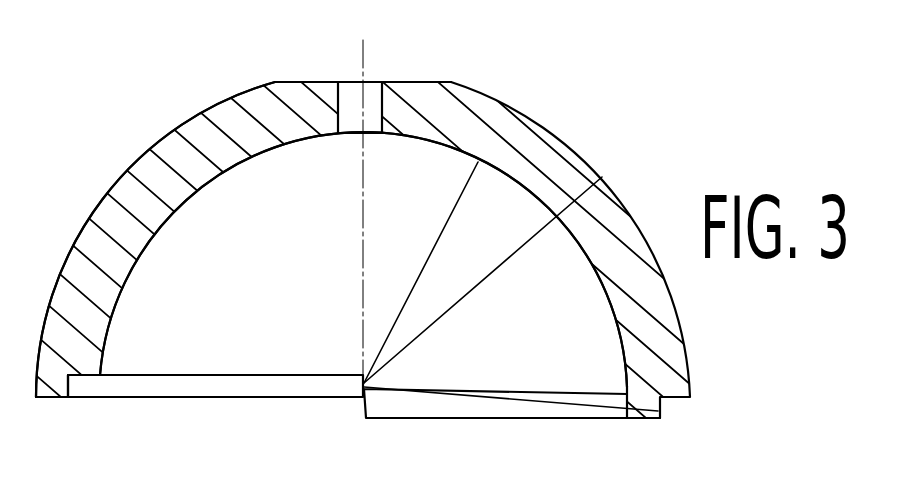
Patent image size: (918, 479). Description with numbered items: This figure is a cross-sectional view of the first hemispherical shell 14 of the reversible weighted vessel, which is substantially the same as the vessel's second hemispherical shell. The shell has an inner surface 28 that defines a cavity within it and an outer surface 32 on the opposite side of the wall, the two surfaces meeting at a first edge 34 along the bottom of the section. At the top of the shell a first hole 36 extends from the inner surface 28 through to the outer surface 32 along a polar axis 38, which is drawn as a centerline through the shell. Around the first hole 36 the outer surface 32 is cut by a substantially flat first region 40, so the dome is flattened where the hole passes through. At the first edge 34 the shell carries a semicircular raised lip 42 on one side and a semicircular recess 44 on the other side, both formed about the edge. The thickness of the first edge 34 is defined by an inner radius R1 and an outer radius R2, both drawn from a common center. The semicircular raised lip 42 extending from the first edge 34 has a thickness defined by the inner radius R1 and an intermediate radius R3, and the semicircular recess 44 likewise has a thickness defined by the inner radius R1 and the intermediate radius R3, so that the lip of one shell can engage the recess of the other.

The first hemispherical shell 14 is at (459, 239).
The inner surface 28 is at (617, 344).
The outer surface 32 is at (68, 250).
The first edge 34 is at (67, 408).
The first hole 36 is at (352, 100).
The polar axis 38 is at (365, 63).
The substantially flat first region 40 is at (299, 74).
The semicircular raised lip 42 is at (425, 407).
The semicircular recess 44 is at (230, 387).
The inner radius R1 is at (455, 207).
The outer radius R2 is at (508, 266).
The intermediate radius R3 is at (580, 395).